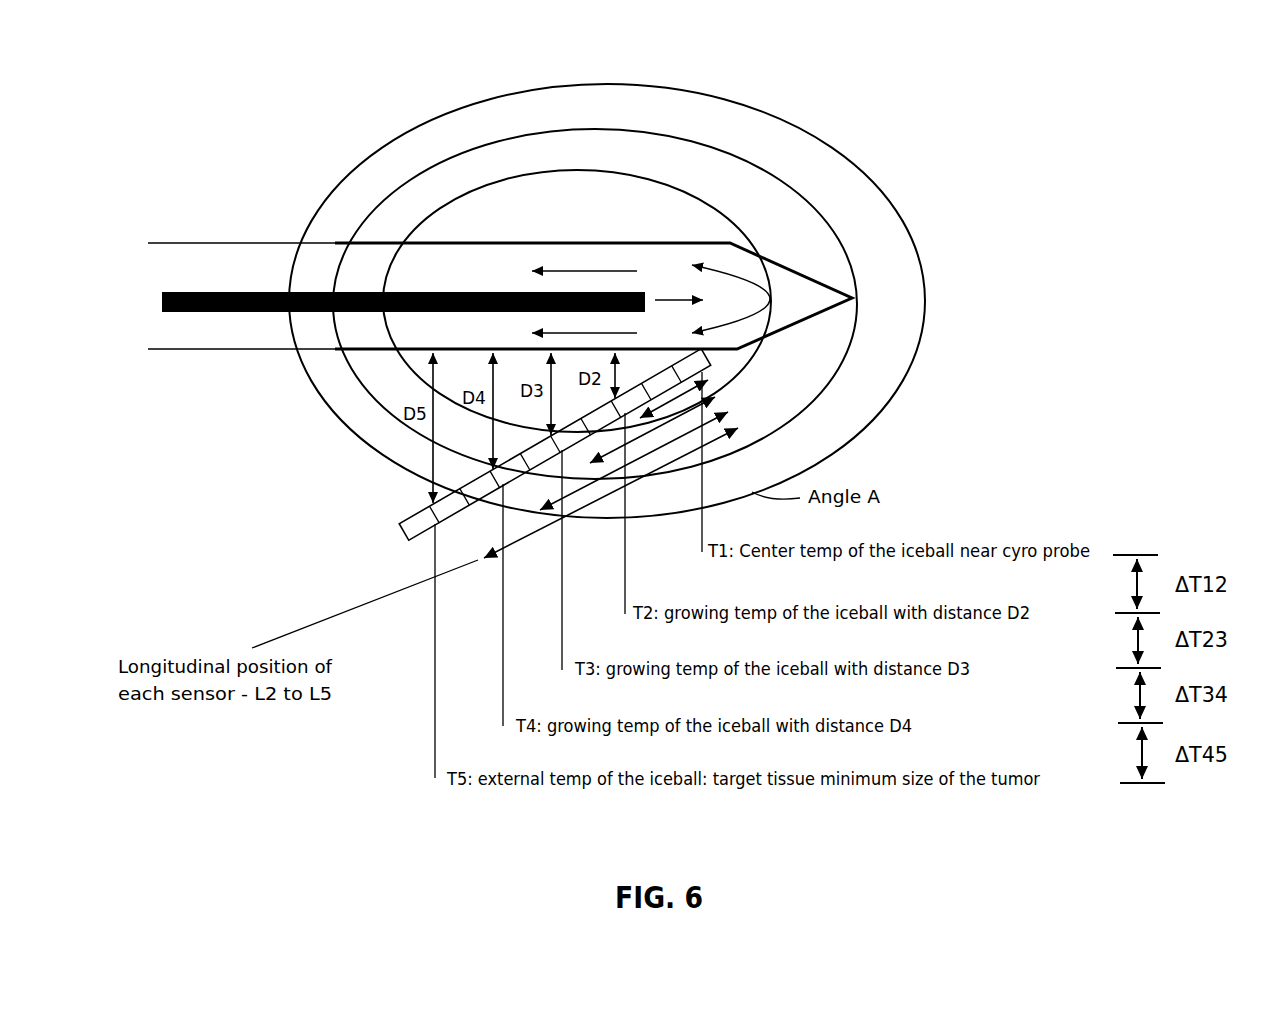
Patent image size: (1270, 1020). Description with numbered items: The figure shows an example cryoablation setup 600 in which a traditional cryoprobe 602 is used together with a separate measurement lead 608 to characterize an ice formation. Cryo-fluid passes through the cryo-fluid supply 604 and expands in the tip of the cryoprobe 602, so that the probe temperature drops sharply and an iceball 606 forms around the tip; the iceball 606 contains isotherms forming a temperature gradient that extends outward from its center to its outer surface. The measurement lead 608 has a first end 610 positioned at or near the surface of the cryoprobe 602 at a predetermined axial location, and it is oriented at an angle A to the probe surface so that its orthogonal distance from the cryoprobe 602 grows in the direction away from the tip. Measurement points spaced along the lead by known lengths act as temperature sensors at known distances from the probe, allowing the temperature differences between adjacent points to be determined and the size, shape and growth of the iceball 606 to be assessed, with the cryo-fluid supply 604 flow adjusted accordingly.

The setup 600 is at (1100, 46).
The cryoprobe 602 is at (193, 353).
The cryo-fluid supply 604 is at (362, 291).
The iceball 606 is at (405, 133).
The measurement lead 608 is at (403, 513).
The first end 610 is at (712, 370).